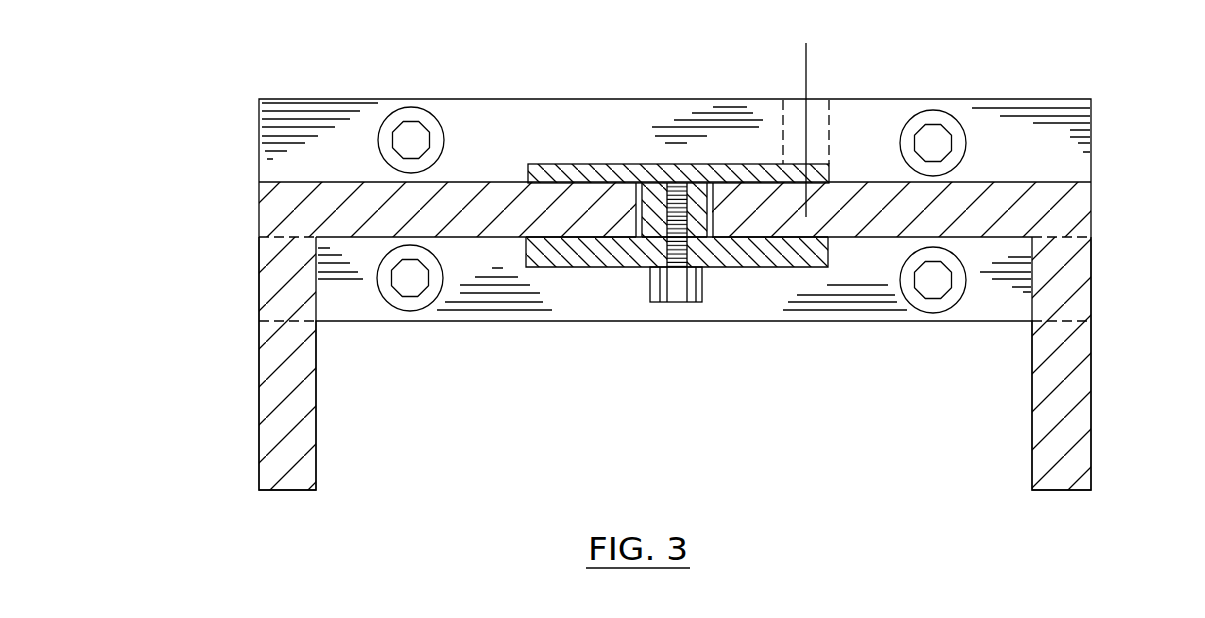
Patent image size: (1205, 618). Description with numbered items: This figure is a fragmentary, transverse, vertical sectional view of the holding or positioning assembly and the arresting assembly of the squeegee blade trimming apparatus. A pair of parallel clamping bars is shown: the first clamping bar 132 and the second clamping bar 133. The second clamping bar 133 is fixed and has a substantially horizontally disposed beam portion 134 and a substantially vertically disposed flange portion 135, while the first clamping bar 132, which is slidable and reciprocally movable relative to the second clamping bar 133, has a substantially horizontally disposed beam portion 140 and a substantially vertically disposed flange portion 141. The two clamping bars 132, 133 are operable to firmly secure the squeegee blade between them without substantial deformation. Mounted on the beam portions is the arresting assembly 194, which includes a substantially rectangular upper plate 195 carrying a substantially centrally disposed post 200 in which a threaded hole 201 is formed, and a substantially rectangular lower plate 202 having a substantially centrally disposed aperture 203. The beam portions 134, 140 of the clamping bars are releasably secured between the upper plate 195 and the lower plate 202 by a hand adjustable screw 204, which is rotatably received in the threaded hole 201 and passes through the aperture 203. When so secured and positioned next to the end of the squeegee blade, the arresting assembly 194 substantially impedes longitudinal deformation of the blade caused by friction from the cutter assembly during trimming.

The first clamping bar 132 is at (272, 203).
The second clamping bar 133 is at (719, 144).
The beam portion 134 is at (970, 197).
The flange portion 135 is at (1070, 368).
The beam portion 140 is at (443, 192).
The flange portion 141 is at (272, 400).
The arresting assembly 194 is at (628, 145).
The upper plate 195 is at (713, 172).
The post 200 is at (645, 238).
The threaded hole 201 is at (652, 212).
The lower plate 202 is at (812, 250).
The aperture 203 is at (668, 262).
The hand adjustable screw 204 is at (684, 302).